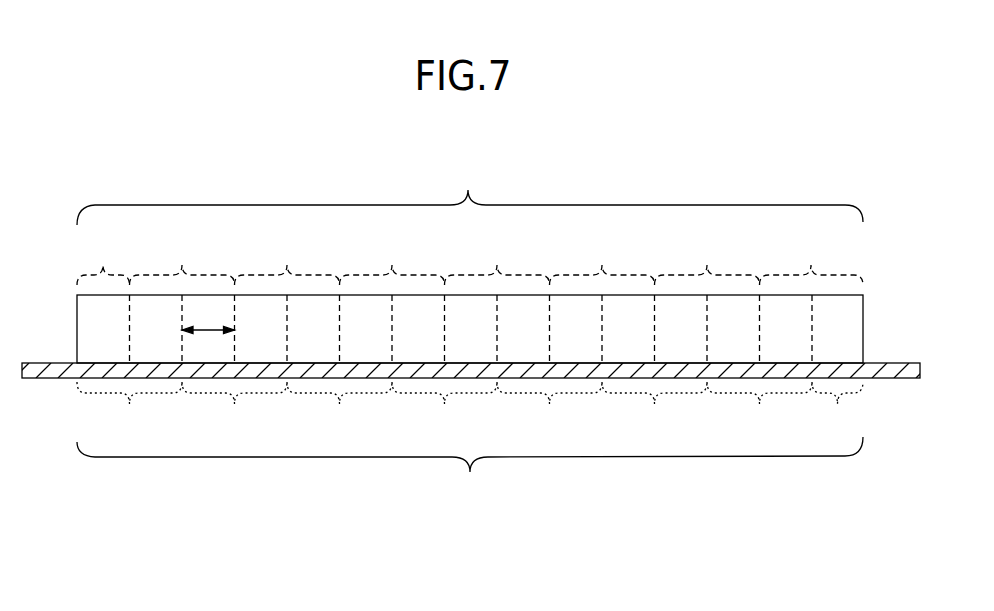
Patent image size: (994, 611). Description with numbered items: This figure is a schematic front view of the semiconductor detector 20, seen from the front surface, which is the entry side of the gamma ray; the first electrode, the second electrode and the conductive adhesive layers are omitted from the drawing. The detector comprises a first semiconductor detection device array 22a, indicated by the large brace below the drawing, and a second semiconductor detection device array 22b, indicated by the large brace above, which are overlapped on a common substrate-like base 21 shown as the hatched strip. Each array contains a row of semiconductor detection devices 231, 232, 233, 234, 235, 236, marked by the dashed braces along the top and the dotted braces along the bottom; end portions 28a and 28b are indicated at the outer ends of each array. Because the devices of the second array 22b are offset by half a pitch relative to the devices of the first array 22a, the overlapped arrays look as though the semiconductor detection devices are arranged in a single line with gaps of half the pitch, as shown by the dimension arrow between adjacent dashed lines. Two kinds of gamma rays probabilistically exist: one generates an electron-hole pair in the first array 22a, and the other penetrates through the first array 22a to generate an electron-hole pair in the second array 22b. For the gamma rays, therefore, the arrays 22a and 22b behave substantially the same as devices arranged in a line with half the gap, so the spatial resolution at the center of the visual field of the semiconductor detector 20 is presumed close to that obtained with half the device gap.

The semiconductor detector 20 is at (77, 154).
The substrate 21 is at (42, 363).
The first semiconductor detection device array 22a is at (470, 471).
The second semiconductor detection device array 22b is at (470, 194).
The semiconductor detection device 231 is at (209, 339).
The semiconductor detection device 232 is at (314, 339).
The semiconductor detection device 233 is at (419, 339).
The semiconductor detection device 234 is at (524, 339).
The semiconductor detection device 235 is at (629, 339).
The semiconductor detection device 236 is at (734, 339).
The end electrode portion a 28a is at (470, 339).
The end electrode portion b 28b is at (470, 339).